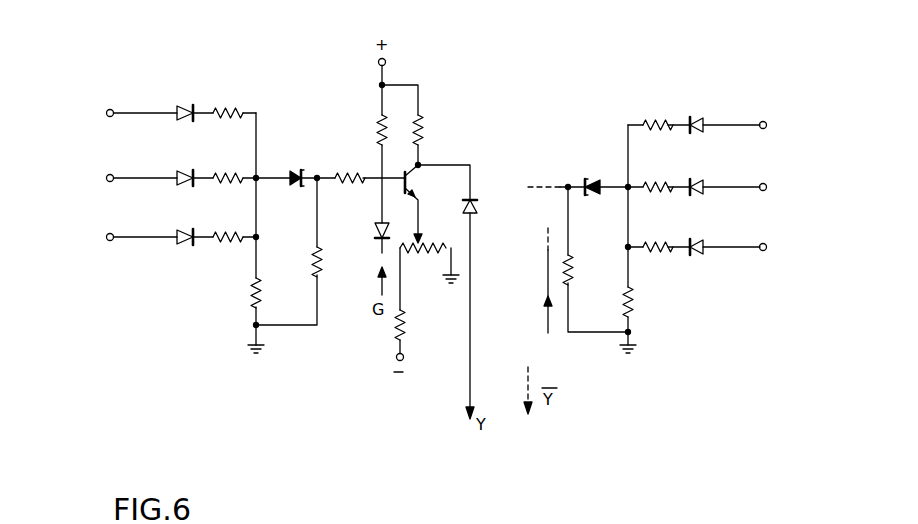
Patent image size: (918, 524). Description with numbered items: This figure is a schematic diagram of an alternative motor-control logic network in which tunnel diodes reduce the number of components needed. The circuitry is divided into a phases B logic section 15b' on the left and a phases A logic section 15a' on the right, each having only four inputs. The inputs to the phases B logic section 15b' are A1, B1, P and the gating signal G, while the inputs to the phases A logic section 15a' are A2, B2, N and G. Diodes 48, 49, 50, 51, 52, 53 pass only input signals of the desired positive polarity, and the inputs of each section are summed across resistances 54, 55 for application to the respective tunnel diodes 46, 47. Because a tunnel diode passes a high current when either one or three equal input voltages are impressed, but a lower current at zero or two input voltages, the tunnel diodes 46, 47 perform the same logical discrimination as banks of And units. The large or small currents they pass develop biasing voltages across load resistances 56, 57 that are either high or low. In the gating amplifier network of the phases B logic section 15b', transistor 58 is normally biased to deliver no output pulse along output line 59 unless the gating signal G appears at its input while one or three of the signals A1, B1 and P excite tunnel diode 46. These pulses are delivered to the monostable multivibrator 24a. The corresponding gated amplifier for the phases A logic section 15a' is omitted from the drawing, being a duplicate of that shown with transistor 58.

The phases B logic section 15b' is at (206, 184).
The phases A logic section 15a' is at (663, 191).
The tunnel diode 46 is at (303, 170).
The tunnel diode 47 is at (583, 177).
The diode 48 is at (196, 118).
The diode 49 is at (196, 183).
The diode 50 is at (196, 242).
The diode 51 is at (690, 131).
The diode 52 is at (690, 193).
The diode 53 is at (690, 253).
The resistance 54 is at (242, 298).
The resistance 55 is at (632, 300).
The load resistance 56 is at (312, 253).
The load resistance 57 is at (574, 266).
The transistor 58 is at (420, 181).
The output line 59 is at (470, 367).
The monostable multivibrator 24a is at (497, 455).